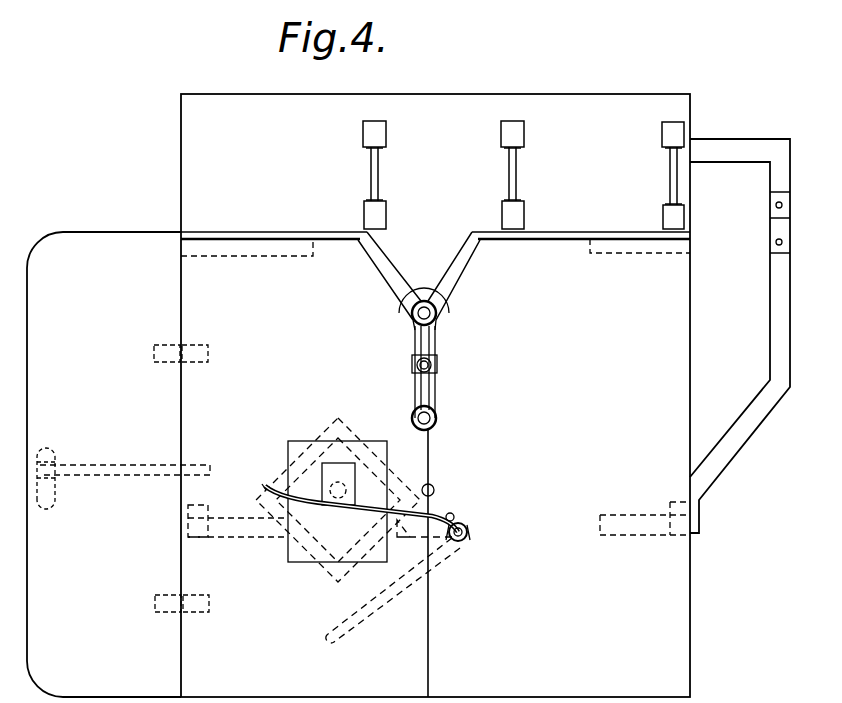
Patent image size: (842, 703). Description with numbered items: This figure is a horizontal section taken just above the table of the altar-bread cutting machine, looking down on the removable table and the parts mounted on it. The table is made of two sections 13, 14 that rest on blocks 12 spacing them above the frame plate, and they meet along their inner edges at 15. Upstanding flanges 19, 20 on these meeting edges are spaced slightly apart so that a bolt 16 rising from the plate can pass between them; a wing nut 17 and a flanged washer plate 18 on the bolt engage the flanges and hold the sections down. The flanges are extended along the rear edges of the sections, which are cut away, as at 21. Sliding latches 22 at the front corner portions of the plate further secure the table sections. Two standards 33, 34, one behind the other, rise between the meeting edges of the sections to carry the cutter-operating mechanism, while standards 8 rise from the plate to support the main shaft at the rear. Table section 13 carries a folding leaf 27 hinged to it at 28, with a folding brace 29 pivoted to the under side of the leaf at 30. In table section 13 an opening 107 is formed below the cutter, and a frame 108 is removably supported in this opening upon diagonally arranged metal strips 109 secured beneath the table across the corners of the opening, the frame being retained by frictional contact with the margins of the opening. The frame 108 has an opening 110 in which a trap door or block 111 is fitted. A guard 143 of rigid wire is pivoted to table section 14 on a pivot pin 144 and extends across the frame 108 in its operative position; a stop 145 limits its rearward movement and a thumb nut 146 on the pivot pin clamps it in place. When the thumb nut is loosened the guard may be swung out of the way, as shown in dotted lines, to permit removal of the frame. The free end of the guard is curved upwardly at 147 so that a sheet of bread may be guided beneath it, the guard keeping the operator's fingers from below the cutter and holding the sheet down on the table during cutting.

The standards 8 is at (386, 147).
The blocks 12 is at (296, 257).
The table section 13 is at (277, 367).
The table section 14 is at (584, 420).
The meeting edges 15 is at (430, 597).
The bolt 16 is at (430, 366).
The wing nut 17 is at (437, 361).
The flanged washer plate 18 is at (414, 325).
The flange 19 is at (250, 240).
The flange 20 is at (572, 242).
The cut-away portion 21 is at (466, 268).
The sliding latches 22 is at (186, 541).
The folding leaf 27 is at (104, 464).
The hinge 28 is at (180, 350).
The folding brace 29 is at (106, 470).
The pivot 30 is at (55, 488).
The standard 33 is at (437, 418).
The rear standard 34 is at (437, 312).
The opening 107 is at (298, 563).
The frame 108 is at (335, 440).
The metal strips 109 is at (278, 520).
The opening 110 is at (357, 491).
The trap door or block 111 is at (343, 473).
The guard 143 is at (380, 602).
The pivot pin 144 is at (462, 541).
The stop 145 is at (455, 515).
The thumb nut 146 is at (468, 530).
The upwardly curved free end 147 is at (267, 490).